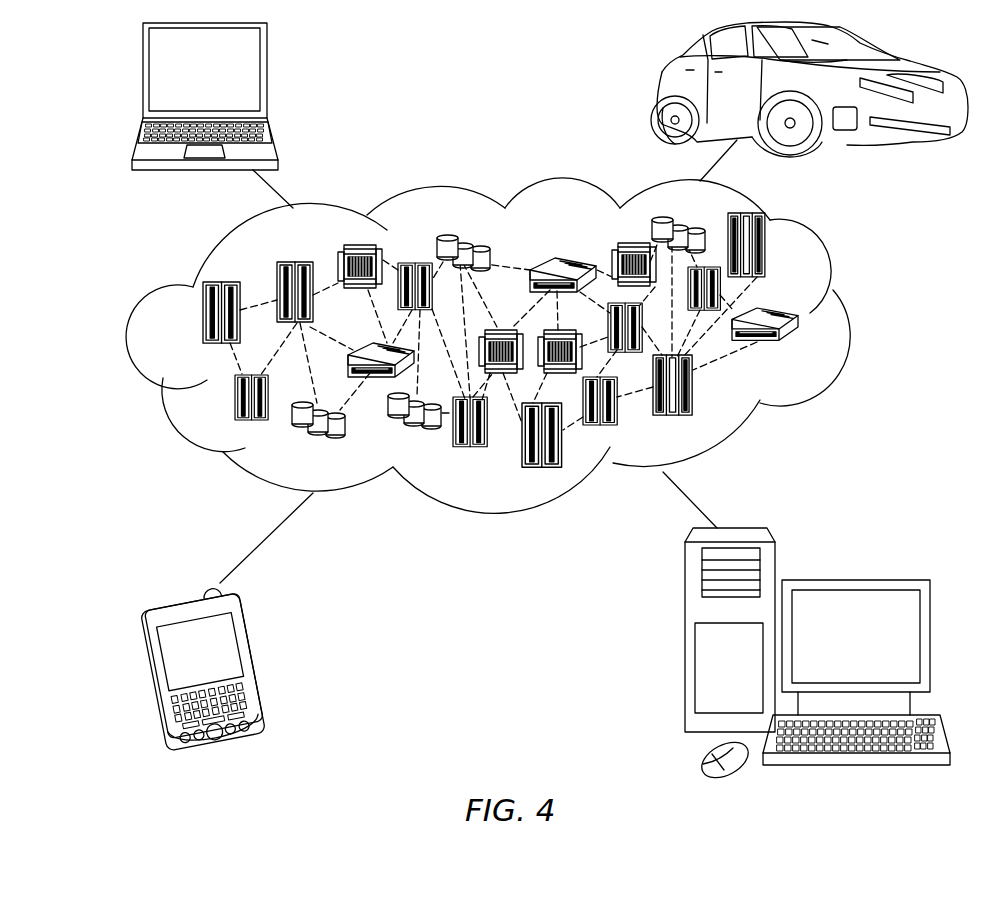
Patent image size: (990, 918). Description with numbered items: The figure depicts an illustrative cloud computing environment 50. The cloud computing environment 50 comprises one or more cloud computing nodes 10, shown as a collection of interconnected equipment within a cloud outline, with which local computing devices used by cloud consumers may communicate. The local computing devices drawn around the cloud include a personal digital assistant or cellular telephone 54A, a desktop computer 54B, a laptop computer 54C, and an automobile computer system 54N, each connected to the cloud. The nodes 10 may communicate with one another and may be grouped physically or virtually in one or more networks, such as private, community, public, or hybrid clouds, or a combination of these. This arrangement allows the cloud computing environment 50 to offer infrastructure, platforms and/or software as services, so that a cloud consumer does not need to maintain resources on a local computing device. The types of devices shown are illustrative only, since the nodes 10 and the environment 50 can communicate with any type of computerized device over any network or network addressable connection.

The cloud computing node 10 is at (800, 347).
The cloud computing environment 50 is at (853, 321).
The personal digital assistant or cellular telephone 54A is at (258, 663).
The desktop computer 54B is at (852, 580).
The laptop computer 54C is at (267, 78).
The automobile computer system 54N is at (658, 93).